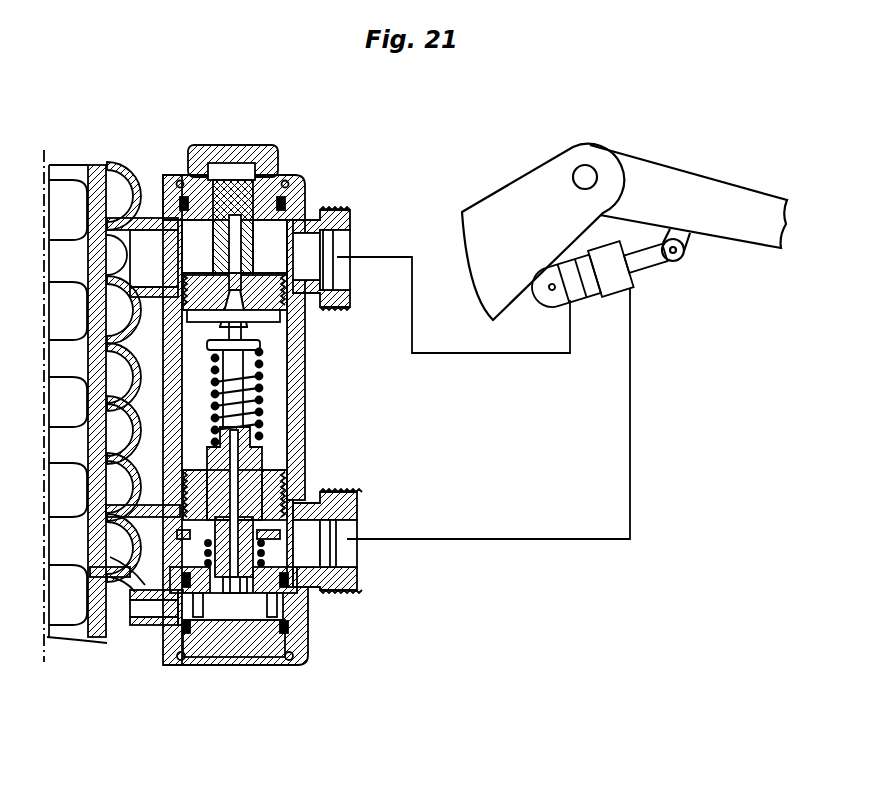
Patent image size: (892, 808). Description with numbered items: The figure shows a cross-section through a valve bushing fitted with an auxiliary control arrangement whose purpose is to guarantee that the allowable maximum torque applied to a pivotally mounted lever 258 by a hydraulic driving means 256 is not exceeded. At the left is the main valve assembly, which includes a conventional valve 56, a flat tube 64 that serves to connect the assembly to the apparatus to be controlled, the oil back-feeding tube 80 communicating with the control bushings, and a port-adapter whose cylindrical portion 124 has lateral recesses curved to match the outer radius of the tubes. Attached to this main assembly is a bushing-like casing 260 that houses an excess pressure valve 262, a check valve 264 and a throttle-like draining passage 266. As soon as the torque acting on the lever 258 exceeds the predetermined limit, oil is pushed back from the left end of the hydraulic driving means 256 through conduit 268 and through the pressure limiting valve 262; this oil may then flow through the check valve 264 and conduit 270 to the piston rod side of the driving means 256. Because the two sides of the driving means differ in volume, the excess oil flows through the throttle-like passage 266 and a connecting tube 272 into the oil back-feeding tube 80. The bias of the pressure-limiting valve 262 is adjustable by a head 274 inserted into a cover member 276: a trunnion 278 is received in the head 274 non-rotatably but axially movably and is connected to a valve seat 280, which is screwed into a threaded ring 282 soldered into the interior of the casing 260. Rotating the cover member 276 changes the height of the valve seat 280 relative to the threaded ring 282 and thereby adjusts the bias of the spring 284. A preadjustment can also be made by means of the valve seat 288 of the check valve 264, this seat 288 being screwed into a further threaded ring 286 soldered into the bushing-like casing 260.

The valve 56 is at (75, 406).
The flat tube 64 is at (102, 225).
The oil back-feeding tube 80 is at (120, 610).
The cylindrical portion 124 is at (160, 240).
The hydraulic driving means 256 is at (578, 289).
The pivotally mounted lever 258 is at (675, 197).
The bushing-like casing 260 is at (295, 385).
The excess pressure valve 262 is at (210, 277).
The check valve 264 is at (293, 570).
The throttle-like draining passage 266 is at (240, 490).
The conduit 268 is at (483, 354).
The conduit 270 is at (618, 540).
The connecting tube 272 is at (162, 608).
The head 274 is at (252, 160).
The cover member 276 is at (284, 197).
The trunnion 278 is at (223, 205).
The valve seat 280 is at (263, 287).
The threaded ring 282 is at (283, 318).
The spring 284 is at (248, 427).
The threaded ring 286 is at (352, 510).
The valve seat 288 is at (268, 518).